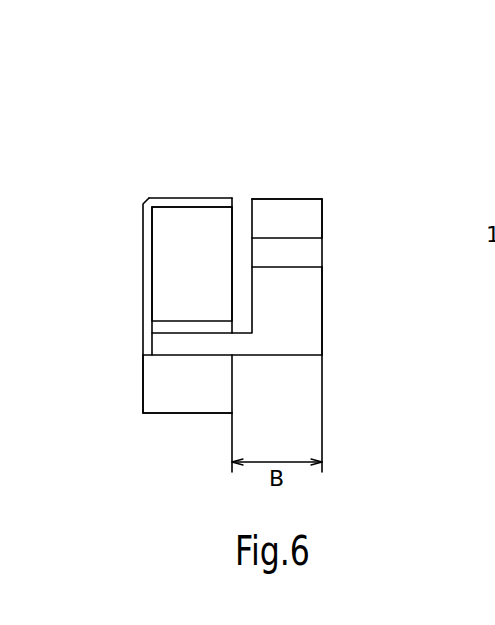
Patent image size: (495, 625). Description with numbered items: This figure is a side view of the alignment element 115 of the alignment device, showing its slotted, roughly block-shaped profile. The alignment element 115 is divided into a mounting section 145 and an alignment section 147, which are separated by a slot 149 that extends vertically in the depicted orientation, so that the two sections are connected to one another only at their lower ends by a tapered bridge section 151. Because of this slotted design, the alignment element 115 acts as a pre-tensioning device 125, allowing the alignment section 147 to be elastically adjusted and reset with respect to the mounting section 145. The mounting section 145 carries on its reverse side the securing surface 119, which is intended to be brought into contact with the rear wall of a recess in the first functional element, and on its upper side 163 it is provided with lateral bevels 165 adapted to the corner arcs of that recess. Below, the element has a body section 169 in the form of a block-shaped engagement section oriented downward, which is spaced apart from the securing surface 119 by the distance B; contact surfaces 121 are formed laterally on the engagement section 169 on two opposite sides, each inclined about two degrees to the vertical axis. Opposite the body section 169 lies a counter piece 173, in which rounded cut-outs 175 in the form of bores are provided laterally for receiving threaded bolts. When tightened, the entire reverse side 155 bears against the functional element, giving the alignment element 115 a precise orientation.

The alignment element 115 is at (316, 137).
The securing surface 119 is at (323, 307).
The contact surfaces 121 is at (202, 400).
The pre-tensioning device 125 is at (255, 362).
The mounting section 145 is at (310, 328).
The alignment section 147 is at (170, 243).
The slot 149 is at (241, 218).
The bridge section 151 is at (243, 347).
The reverse side 155 is at (322, 210).
The upper side 163 is at (291, 200).
The lateral bevels 165 is at (310, 226).
The body section 169 is at (163, 400).
The counter piece 173 is at (186, 216).
The rounded cut-outs 175 is at (157, 292).